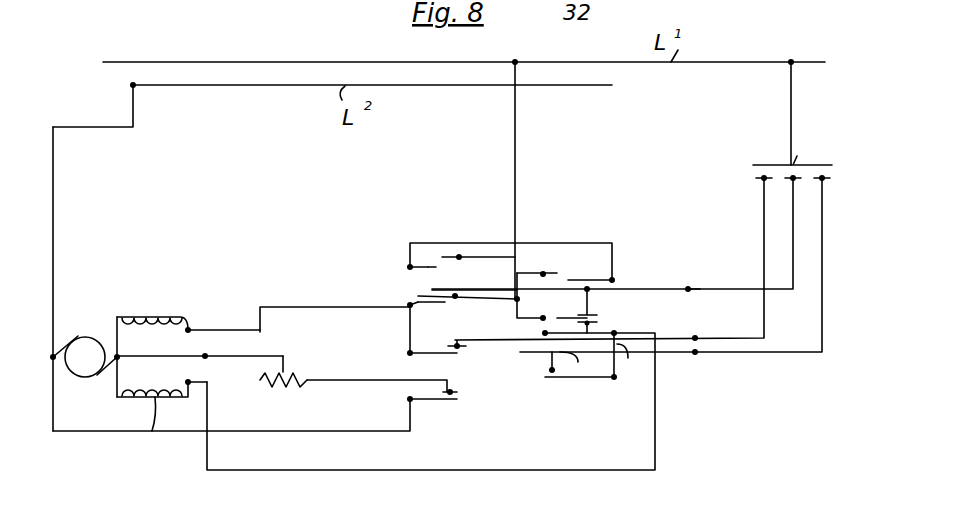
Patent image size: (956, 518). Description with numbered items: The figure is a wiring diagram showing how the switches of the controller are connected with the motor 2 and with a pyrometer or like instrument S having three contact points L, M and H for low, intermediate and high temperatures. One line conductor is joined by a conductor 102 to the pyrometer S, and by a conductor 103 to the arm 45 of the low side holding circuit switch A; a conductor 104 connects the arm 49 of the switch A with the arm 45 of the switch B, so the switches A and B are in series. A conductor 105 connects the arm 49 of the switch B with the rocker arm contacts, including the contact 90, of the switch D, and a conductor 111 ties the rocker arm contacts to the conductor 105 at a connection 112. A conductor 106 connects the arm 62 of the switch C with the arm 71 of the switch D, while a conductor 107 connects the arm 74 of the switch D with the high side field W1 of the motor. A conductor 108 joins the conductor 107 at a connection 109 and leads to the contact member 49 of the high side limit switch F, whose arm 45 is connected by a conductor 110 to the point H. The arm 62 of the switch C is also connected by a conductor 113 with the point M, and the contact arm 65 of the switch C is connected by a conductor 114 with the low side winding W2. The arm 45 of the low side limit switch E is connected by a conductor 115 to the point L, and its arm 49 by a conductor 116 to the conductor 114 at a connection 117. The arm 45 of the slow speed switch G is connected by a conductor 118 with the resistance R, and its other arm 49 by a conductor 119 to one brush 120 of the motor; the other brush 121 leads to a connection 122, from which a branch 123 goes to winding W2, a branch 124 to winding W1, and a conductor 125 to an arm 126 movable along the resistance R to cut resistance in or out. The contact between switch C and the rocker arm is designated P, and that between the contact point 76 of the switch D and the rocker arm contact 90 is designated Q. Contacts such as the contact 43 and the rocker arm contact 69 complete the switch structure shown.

The motor 2 is at (84, 347).
The relay contact 43 is at (428, 266).
The switch arm 45 is at (480, 256).
The switch arm 49 is at (441, 428).
The arm of switch C 62 is at (462, 283).
The contact arm of switch C 65 is at (445, 305).
The contact blade 69 is at (467, 297).
The arm of switch D 71 is at (603, 313).
The arm of switch D 74 is at (583, 364).
The contact point of switch D 76 is at (547, 340).
The rocker arm contact 90 is at (572, 306).
The conductor 102 is at (810, 100).
The conductor 103 is at (517, 155).
The conductor 104 is at (578, 233).
The conductor 105 is at (500, 300).
The conductor 106 is at (613, 280).
The conductor 107 is at (643, 327).
The conductor 108 is at (641, 364).
The connection 109 is at (613, 331).
The conductor 110 is at (747, 353).
The conductor 111 is at (488, 292).
The connection 112 is at (538, 297).
The conductor 113 is at (642, 288).
The conductor 114 is at (322, 298).
The conductor 115 is at (733, 328).
The conductor 116 is at (408, 327).
The connection 117 is at (408, 307).
The conductor 118 is at (352, 381).
The conductor 119 is at (352, 431).
The motor brush 120 is at (56, 350).
The motor brush 121 is at (111, 366).
The connection 122 is at (188, 316).
The branch 123 is at (118, 334).
The branch 124 is at (162, 411).
The conductor 125 is at (182, 348).
The movable arm 126 is at (320, 337).
The low side holding circuit switch A is at (478, 238).
The switch B is at (560, 265).
The switch C is at (406, 301).
The switch D is at (609, 316).
The low side limit switch E is at (464, 358).
The high side limit switch F is at (578, 395).
The slow speed switch G is at (460, 397).
The contact P is at (461, 313).
The contact Q is at (540, 336).
The resistance R is at (294, 389).
The pyrometer S is at (768, 138).